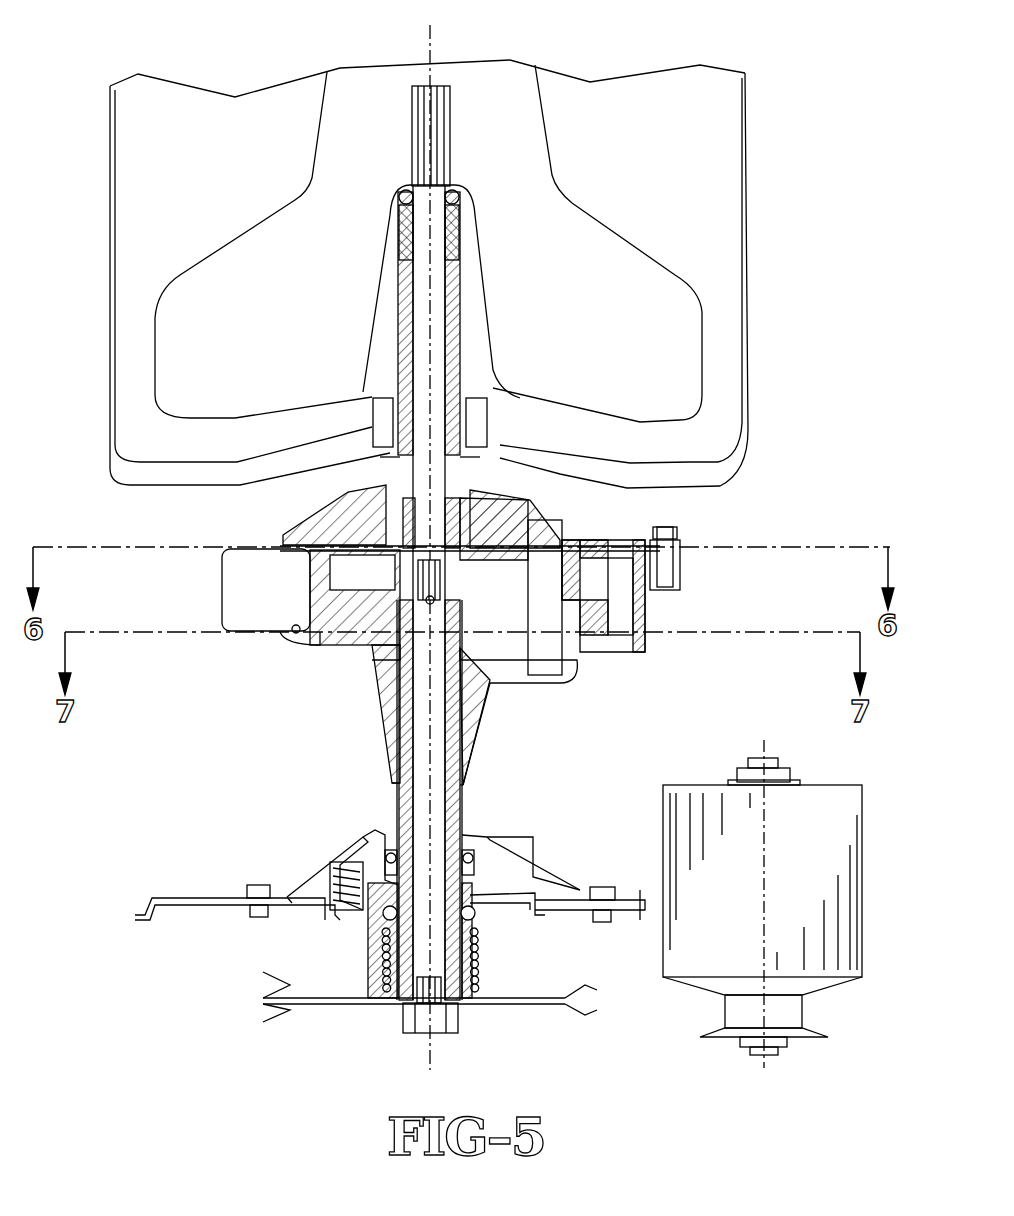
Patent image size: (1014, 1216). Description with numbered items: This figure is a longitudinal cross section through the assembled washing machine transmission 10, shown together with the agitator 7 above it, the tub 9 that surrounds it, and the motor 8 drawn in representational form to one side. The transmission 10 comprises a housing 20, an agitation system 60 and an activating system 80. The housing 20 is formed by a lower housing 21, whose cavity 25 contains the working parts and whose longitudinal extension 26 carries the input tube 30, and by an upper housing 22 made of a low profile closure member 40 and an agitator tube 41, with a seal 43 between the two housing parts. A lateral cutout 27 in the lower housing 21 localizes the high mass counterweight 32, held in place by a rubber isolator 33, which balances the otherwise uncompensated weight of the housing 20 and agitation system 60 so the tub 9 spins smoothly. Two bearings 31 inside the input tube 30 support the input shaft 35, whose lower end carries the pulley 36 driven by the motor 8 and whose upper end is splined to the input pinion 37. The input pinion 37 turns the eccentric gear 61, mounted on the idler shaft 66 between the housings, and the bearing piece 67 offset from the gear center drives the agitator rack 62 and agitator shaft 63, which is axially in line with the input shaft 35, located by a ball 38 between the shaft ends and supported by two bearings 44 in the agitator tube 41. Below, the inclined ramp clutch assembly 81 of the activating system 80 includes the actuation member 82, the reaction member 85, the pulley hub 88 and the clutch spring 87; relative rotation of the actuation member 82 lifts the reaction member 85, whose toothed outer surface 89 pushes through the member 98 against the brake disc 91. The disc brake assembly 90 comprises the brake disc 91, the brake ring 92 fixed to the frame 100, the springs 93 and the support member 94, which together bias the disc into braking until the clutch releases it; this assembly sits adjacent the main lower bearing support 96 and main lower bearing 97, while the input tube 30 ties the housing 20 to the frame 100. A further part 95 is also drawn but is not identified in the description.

The agitator 7 is at (635, 422).
The motor 8 is at (732, 900).
The tub 9 is at (692, 462).
The transmission 10 is at (732, 652).
The housing 20 is at (638, 656).
The lower housing 21 is at (335, 640).
The upper housing 22 is at (335, 515).
The cavity 25 is at (640, 590).
The longitudinal extension 26 is at (482, 693).
The lateral cutout 27 is at (283, 630).
The input tube 30 is at (460, 815).
The bearings 31 is at (415, 697).
The counterweight 32 is at (237, 583).
The rubber isolator 33 is at (290, 562).
The input shaft 35 is at (435, 758).
The pulley 36 is at (318, 1005).
The input pinion 37 is at (395, 630).
The ball 38 is at (426, 598).
The closure member 40 is at (478, 478).
The agitator tube 41 is at (460, 350).
The seal 43 is at (680, 565).
The bearings 44 is at (408, 245).
The agitation system 60 is at (500, 560).
The eccentric gear 61 is at (578, 622).
The agitator rack 62 is at (495, 565).
The agitator shaft 63 is at (435, 305).
The idler shaft 66 is at (555, 535).
The bearing piece 67 is at (615, 568).
The activating system 80 is at (545, 840).
The inclined ramp clutch assembly 81 is at (365, 932).
The actuation member 82 is at (480, 928).
The reaction member 85 is at (478, 915).
The clutch spring 87 is at (480, 975).
The pulley hub 88 is at (460, 1000).
The toothed outer surface 89 is at (510, 840).
The disc brake assembly 90 is at (572, 910).
The brake disc 91 is at (565, 900).
The brake ring 92 is at (290, 905).
The spring 93 is at (350, 908).
The support member 94 is at (330, 868).
The pivot 95 is at (355, 845).
The main lower bearing support 96 is at (295, 870).
The main lower bearing 97 is at (380, 845).
The member 98 is at (290, 892).
The frame 100 is at (168, 898).